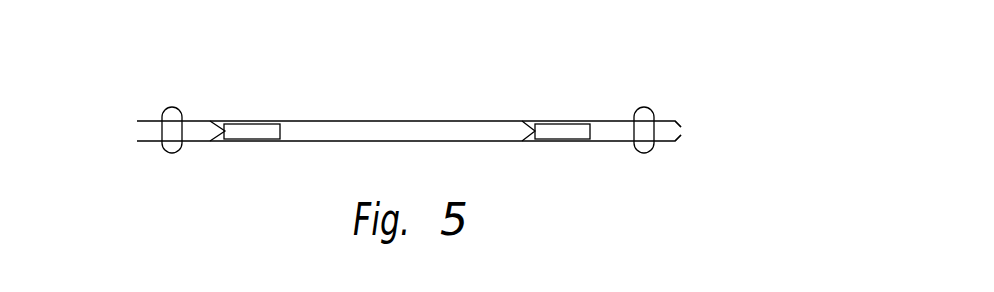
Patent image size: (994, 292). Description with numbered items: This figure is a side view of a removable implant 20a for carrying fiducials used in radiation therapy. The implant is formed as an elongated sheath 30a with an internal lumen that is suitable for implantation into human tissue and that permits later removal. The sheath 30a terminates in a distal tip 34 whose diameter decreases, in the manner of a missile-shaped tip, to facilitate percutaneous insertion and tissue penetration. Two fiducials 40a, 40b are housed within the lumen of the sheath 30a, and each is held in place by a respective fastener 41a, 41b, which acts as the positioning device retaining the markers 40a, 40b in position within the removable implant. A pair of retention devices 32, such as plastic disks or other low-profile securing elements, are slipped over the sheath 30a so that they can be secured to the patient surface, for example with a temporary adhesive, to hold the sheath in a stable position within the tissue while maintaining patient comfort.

The removable implant 20a is at (600, 73).
The sheath 30a is at (383, 121).
The retention device 32 is at (163, 153).
The distal tip 34 is at (680, 125).
The fiducial 40a is at (262, 122).
The fiducial 40b is at (556, 124).
The fastener 41a is at (220, 136).
The fastener 41b is at (528, 137).